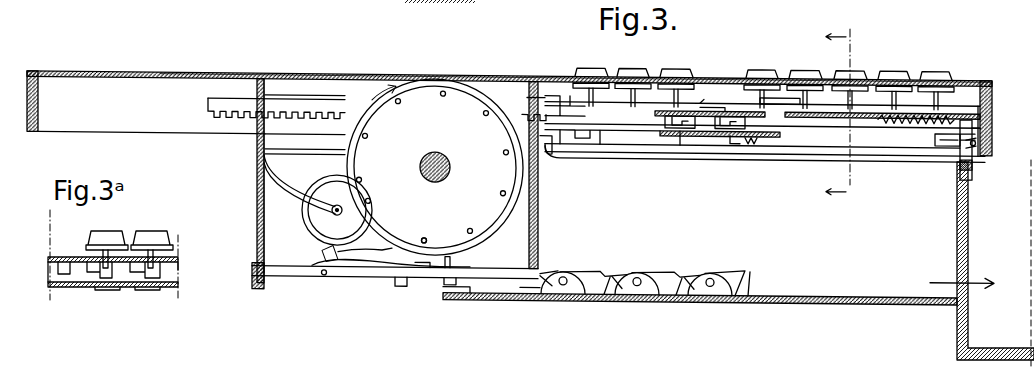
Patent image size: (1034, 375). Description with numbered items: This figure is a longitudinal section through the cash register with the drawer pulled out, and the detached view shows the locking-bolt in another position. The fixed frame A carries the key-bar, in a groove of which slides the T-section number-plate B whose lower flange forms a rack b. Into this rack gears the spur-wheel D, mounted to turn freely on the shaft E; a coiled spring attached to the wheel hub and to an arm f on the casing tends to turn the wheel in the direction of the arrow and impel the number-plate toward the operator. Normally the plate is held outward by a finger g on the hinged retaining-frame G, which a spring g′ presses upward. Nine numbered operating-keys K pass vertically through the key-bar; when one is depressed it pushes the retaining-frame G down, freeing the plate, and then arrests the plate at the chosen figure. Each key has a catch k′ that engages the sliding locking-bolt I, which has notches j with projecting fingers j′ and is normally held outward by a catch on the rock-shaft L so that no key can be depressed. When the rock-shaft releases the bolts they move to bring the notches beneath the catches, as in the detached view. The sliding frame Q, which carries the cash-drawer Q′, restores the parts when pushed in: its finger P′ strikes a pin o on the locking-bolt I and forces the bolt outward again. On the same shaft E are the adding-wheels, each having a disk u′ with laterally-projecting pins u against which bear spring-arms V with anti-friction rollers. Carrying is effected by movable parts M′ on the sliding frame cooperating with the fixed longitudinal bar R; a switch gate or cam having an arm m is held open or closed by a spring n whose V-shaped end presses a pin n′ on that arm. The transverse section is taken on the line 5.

In FIG. 3, the fixed frame A is at (504, 114).
In FIG. 3, the sliding number-plate B is at (405, 89).
In FIG. 3, the rack b is at (214, 110).
In FIG. 3, the arm f is at (305, 145).
In FIG. 3, the shaft E is at (451, 162).
In FIG. 3, the spur-wheel D is at (496, 226).
In FIG. 3, the pins u is at (433, 167).
In FIG. 3, the disk u′ is at (420, 227).
In FIG. 3, the spring-arm V is at (318, 200).
In FIG. 3, the spring n is at (324, 247).
In FIG. 3, the pin n′ is at (387, 257).
In FIG. 3, the arm m is at (365, 244).
In FIG. 3, the longitudinal bar R is at (395, 272).
In FIG. 3, the movable parts of the carrying devices M′ is at (645, 274).
In FIG. 3, the operating-keys K is at (763, 82).
In FIG. 3A, the operating-keys K is at (129, 235).
In FIG. 3, the pin o is at (565, 104).
In FIG. 3, the hinged retaining-frame G is at (765, 136).
In FIG. 3, the finger g is at (547, 152).
In FIG. 3, the locking-bolt I is at (708, 128).
In FIG. 3A, the locking-bolt I is at (170, 275).
In FIG. 3, the notches j is at (680, 118).
In FIG. 3A, the notches j is at (98, 278).
In FIG. 3, the projecting finger j′ is at (728, 88).
In FIG. 3A, the projecting finger j′ is at (100, 262).
In FIG. 3, the catch k′ is at (729, 125).
In FIG. 3A, the catch k′ is at (155, 258).
In FIG. 3, the spring g′ is at (740, 138).
In FIG. 3, the rock-shaft L is at (990, 128).
In FIG. 3, the finger P′ is at (975, 150).
In FIG. 3, the sliding frame Q is at (932, 276).
In FIG. 3, the cash-drawer Q′ is at (995, 265).
In FIG. 3, the section line 5 is at (839, 115).